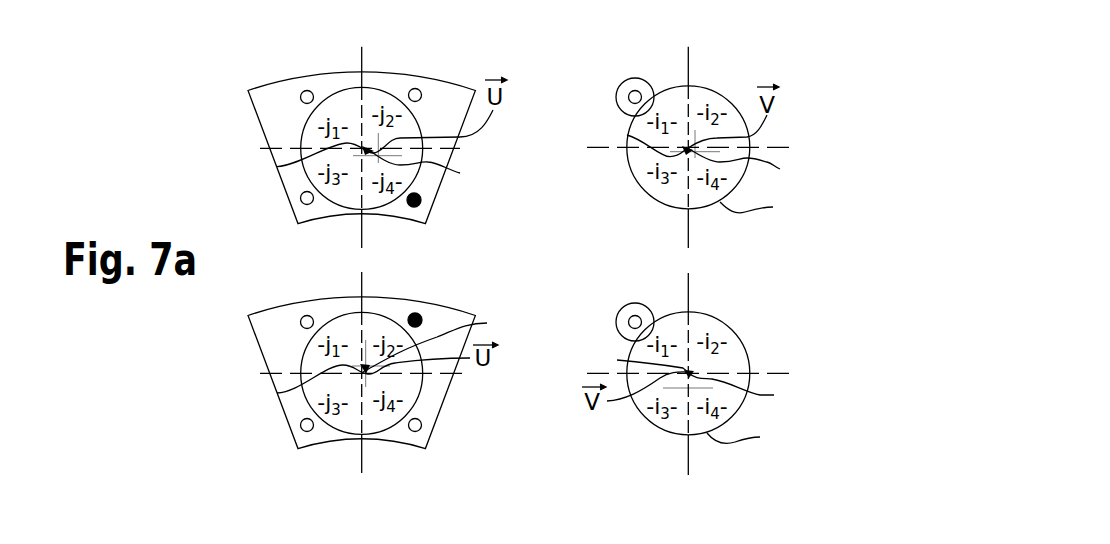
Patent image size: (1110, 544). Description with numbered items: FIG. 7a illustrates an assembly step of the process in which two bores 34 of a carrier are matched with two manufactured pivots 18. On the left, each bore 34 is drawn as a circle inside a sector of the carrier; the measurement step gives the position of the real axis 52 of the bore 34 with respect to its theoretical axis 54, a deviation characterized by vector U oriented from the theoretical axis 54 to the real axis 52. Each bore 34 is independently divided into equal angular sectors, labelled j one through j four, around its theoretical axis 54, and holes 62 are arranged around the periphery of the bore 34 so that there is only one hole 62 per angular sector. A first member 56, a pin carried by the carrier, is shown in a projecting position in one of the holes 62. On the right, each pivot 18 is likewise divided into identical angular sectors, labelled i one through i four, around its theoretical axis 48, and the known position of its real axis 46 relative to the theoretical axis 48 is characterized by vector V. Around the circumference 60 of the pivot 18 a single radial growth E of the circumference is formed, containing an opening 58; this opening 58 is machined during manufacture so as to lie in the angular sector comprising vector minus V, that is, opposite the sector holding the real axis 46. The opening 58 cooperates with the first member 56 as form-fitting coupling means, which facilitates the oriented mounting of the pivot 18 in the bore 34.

The pivot 18 is at (724, 85).
The bore 34 is at (344, 181).
The real axis of the pivot 46 is at (748, 276).
The theoretical axis of the pivot 48 is at (627, 135).
The real axis of the bore 52 is at (440, 260).
The theoretical axis of the bore 54 is at (277, 167).
The first member 56 is at (421, 203).
The opening 58 is at (641, 90).
The circumference of the pivot 60 is at (754, 322).
The holes 62 is at (306, 91).
The radial growth E is at (624, 82).